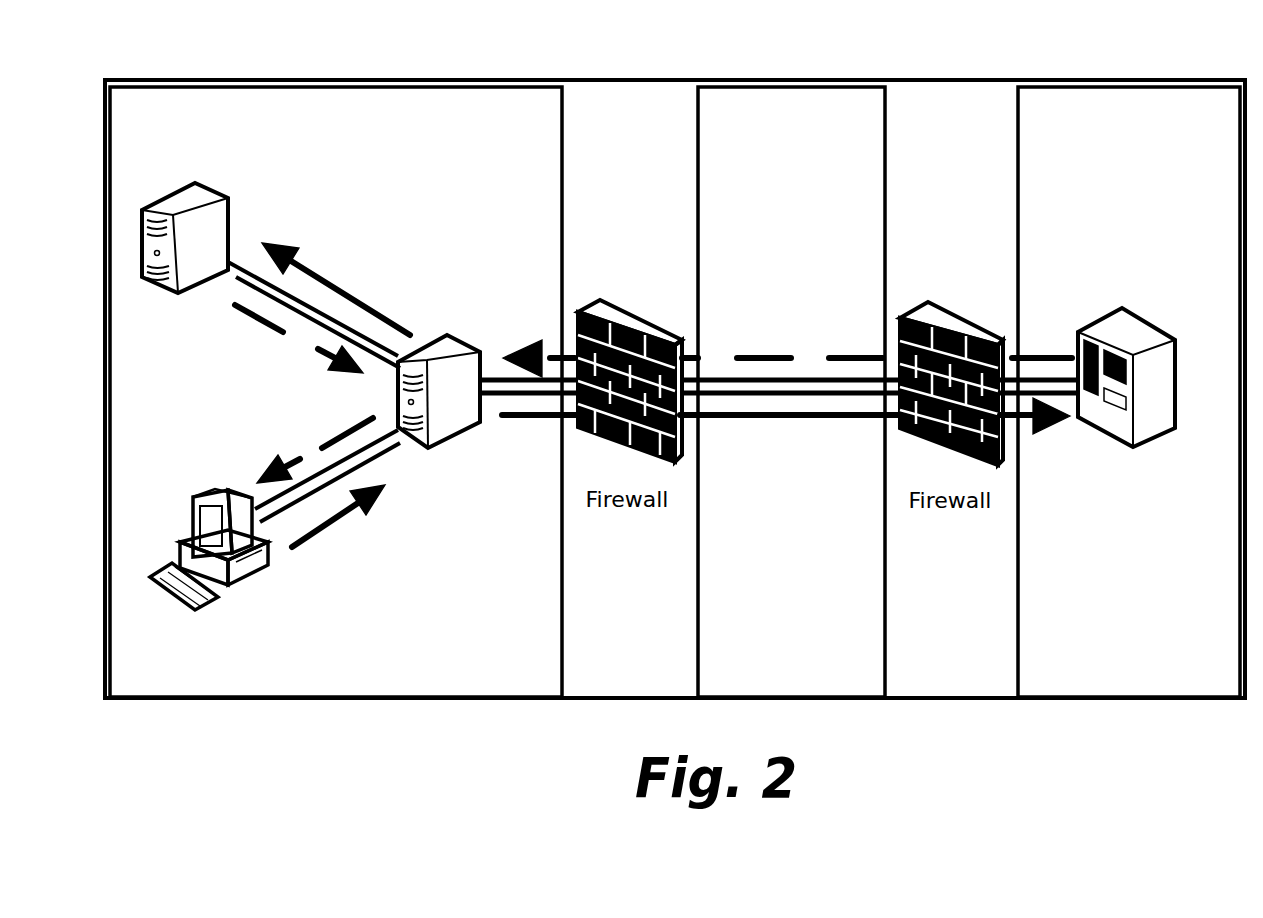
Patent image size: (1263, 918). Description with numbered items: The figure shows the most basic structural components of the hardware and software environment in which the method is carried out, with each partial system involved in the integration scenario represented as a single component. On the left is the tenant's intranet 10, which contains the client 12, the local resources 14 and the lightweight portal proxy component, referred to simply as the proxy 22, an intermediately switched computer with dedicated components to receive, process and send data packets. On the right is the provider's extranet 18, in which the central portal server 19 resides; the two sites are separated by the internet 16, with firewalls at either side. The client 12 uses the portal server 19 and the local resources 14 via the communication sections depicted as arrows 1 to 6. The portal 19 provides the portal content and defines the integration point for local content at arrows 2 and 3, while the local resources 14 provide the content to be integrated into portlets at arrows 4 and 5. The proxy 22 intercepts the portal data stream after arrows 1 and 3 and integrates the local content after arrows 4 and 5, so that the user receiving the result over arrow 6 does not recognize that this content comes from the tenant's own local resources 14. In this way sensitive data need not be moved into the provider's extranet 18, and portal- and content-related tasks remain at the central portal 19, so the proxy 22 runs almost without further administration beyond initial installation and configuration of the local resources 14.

The tenant's intranet 10 is at (350, 92).
The client 12 is at (195, 494).
The local resources 14 is at (185, 200).
The internet 16 is at (770, 84).
The provider's extranet 18 is at (1157, 86).
The portal server 19 is at (1177, 392).
The proxy 22 is at (458, 335).
The arrow 1 is at (338, 520).
The arrow 2 is at (786, 430).
The arrow 3 is at (787, 350).
The arrow 4 is at (336, 289).
The arrow 5 is at (299, 339).
The arrow 6 is at (315, 450).